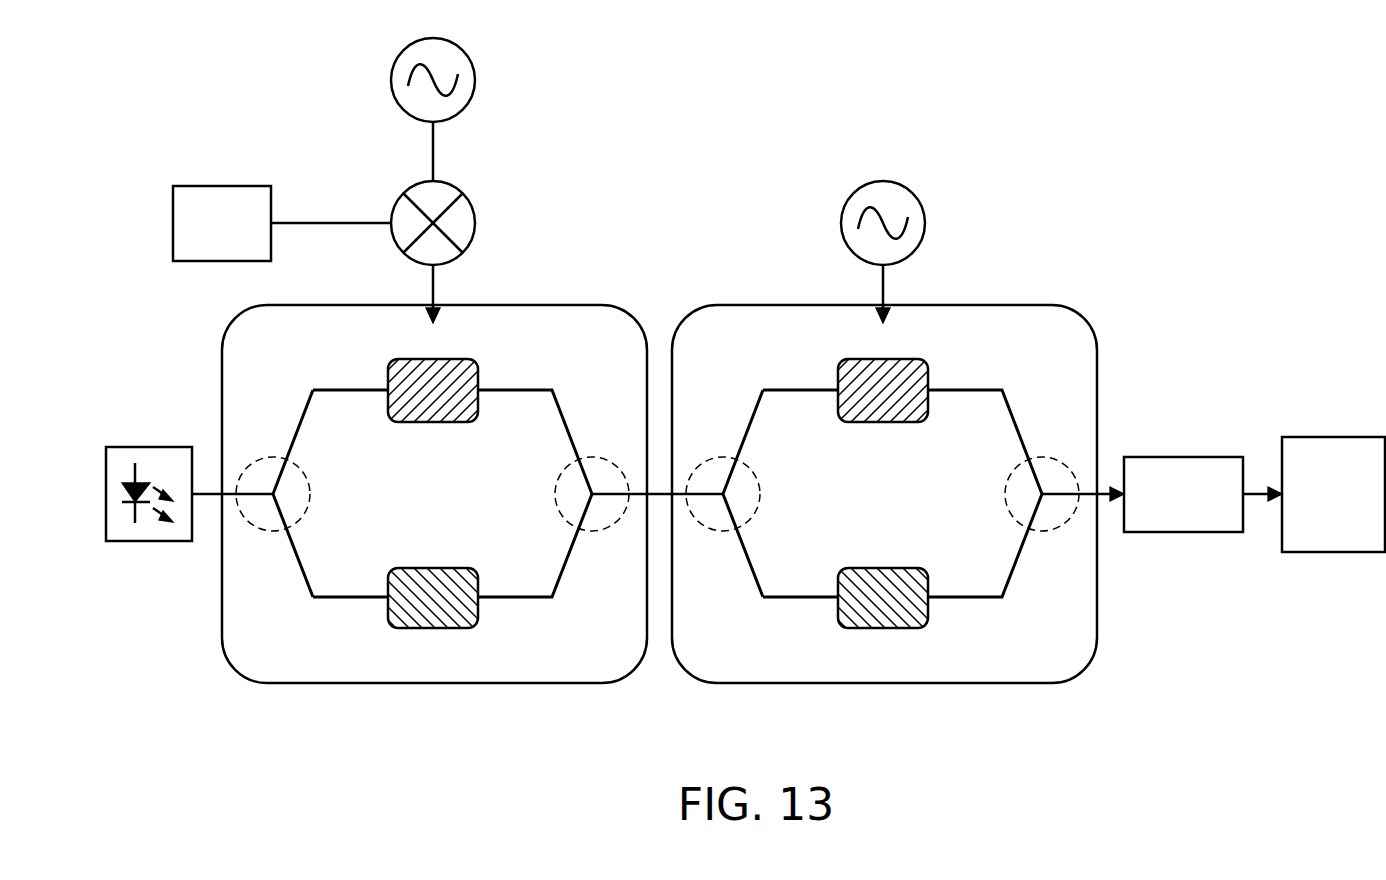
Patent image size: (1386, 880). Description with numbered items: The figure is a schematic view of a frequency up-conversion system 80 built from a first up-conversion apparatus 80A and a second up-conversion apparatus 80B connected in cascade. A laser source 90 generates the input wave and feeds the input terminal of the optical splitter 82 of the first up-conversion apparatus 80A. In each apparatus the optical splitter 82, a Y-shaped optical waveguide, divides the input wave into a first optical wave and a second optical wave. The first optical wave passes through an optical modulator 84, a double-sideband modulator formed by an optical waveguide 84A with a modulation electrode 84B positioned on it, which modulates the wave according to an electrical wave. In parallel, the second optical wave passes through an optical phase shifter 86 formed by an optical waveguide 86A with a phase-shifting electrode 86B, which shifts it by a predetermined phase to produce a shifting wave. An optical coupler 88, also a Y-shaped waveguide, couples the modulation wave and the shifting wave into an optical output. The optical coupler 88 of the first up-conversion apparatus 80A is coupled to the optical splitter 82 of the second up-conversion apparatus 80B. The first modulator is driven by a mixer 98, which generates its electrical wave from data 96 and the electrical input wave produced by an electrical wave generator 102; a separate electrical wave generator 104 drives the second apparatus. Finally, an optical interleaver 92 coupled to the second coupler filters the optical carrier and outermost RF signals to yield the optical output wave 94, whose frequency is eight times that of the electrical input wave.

The frequency up-conversion system 80 is at (1127, 143).
The first up-conversion apparatus 80A is at (633, 327).
The second up-conversion apparatus 80B is at (1083, 327).
The optical splitter 82 is at (276, 532).
The optical modulator 84 is at (580, 257).
The optical waveguide 84A is at (522, 388).
The modulation electrode 84B is at (456, 358).
The optical phase shifter 86 is at (347, 737).
The optical waveguide 86A is at (374, 600).
The phase-shifting electrode 86B is at (432, 630).
The optical coupler 88 is at (594, 532).
The laser source 90 is at (148, 447).
The optical interleaver 92 is at (1185, 457).
The optical output wave 94 is at (1335, 437).
The data 96 is at (222, 186).
The mixer 98 is at (413, 194).
The electrical wave generator 102 is at (476, 78).
The electrical wave generator 104 is at (883, 181).